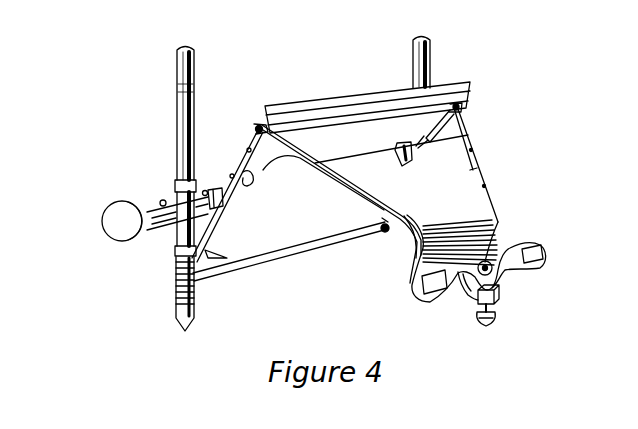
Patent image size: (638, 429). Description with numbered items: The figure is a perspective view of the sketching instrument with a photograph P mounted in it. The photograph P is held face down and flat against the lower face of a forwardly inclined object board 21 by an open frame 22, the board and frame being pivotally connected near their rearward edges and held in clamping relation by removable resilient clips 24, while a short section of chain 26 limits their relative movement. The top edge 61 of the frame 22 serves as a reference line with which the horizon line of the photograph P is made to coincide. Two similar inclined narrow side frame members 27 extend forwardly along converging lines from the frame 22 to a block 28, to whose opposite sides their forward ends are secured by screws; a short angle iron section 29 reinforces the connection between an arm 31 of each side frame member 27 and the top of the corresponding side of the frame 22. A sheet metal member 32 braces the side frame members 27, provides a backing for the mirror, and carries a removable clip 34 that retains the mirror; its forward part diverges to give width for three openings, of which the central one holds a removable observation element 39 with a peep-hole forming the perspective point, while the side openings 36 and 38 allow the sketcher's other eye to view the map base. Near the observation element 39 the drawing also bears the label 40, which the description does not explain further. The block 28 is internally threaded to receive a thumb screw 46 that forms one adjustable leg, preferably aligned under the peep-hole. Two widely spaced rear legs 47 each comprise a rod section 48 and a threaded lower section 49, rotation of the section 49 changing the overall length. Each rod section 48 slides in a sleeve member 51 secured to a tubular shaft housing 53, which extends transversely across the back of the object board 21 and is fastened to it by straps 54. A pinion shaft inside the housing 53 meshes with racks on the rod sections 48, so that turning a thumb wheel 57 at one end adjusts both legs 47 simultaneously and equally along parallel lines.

The object board 21 is at (272, 248).
The open frame 22 is at (232, 220).
The resilient clips 24 is at (259, 127).
The chain 26 is at (246, 156).
The side frame members 27 is at (467, 133).
The block 28 is at (499, 293).
The angle iron section 29 is at (456, 126).
The arm 31 is at (249, 178).
The member 32 is at (474, 156).
The clip 34 is at (404, 165).
The opening 36 is at (441, 295).
The opening 38 is at (546, 256).
The observation element 39 is at (498, 228).
The ring 40 is at (492, 263).
The thumb screw 46 is at (493, 318).
The legs 47 is at (196, 100).
The leg section 48 is at (178, 88).
The leg section 49 is at (194, 302).
The sleeve member 51 is at (178, 190).
The tubular shaft housing 53 is at (155, 205).
The straps 54 is at (215, 195).
The thumb wheel 57 is at (110, 220).
The top edge 61 is at (370, 110).
The photograph P is at (318, 105).